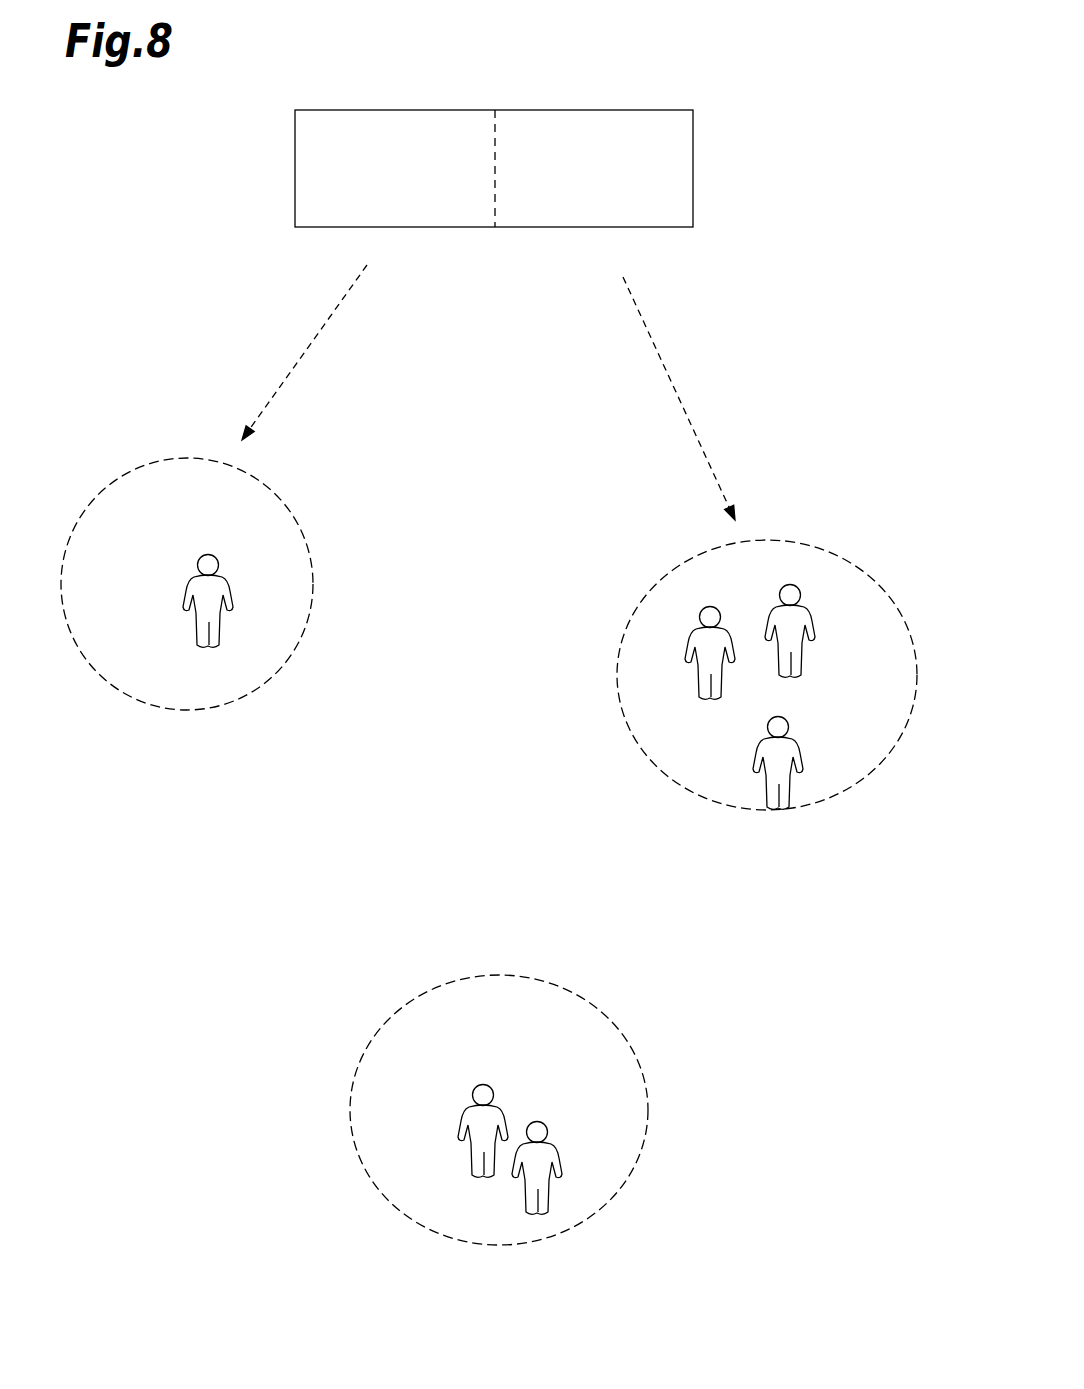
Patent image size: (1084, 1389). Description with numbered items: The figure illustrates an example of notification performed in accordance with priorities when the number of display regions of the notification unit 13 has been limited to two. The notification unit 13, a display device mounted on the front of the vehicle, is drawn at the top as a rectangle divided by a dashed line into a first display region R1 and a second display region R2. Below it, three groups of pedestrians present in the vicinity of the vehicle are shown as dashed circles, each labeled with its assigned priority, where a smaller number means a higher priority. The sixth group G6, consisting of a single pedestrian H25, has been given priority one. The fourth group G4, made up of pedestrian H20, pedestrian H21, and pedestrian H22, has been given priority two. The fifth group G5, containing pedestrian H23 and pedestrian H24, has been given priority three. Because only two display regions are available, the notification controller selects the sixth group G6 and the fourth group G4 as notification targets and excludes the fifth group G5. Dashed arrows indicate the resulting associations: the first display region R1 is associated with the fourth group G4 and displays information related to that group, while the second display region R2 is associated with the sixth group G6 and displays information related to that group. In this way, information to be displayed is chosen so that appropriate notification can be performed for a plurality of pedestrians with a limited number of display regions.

The notification unit 13 is at (638, 110).
The first display region R1 is at (592, 166).
The second display region R2 is at (393, 166).
The fourth group G4 is at (876, 578).
The fifth group G5 is at (603, 1016).
The sixth group G6 is at (146, 468).
The pedestrian H20 is at (712, 606).
The pedestrian H21 is at (797, 584).
The pedestrian H22 is at (785, 718).
The pedestrian H23 is at (488, 1086).
The pedestrian H24 is at (544, 1122).
The pedestrian H25 is at (203, 557).